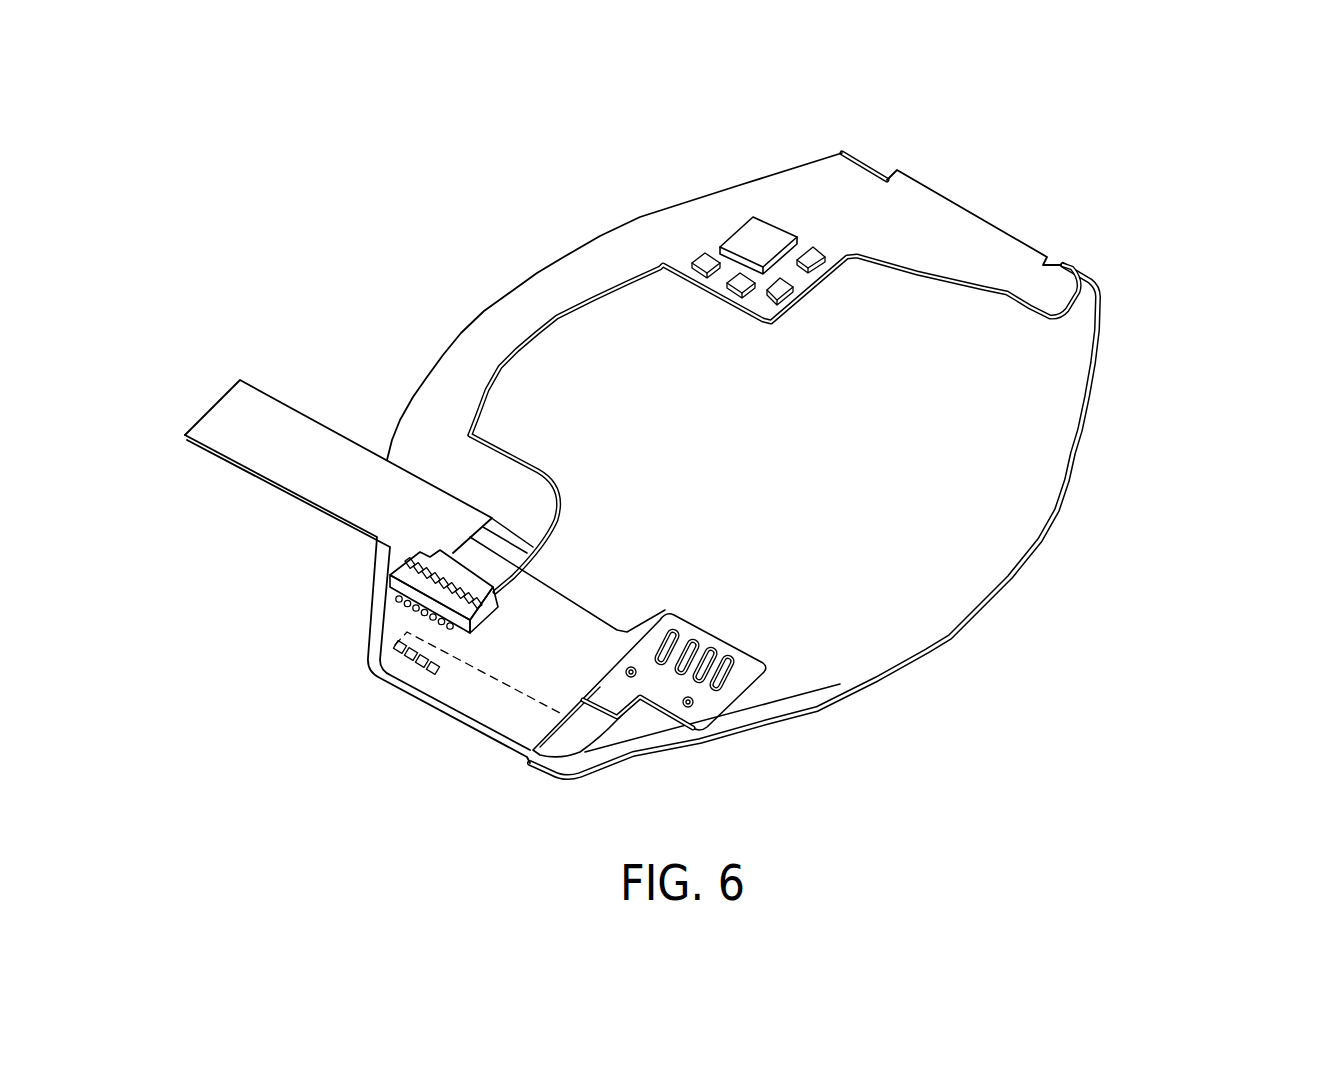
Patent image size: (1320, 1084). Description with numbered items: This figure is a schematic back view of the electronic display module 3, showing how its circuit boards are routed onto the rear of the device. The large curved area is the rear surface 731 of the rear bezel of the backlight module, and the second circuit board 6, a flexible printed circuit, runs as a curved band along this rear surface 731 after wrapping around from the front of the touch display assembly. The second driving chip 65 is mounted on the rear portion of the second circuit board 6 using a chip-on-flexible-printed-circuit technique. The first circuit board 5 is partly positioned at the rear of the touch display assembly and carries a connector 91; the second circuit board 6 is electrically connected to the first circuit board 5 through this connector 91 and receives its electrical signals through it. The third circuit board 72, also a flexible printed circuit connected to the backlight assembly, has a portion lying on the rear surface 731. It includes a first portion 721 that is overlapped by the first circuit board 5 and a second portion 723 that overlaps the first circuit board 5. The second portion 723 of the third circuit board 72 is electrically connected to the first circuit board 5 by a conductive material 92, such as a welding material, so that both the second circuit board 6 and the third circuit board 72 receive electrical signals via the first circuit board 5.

The electronic display module 3 is at (430, 201).
The first circuit board 5 is at (468, 733).
The second circuit board 6 is at (625, 218).
The second driving chip 65 is at (760, 237).
The third circuit board 72 is at (612, 745).
The first portion 721 is at (428, 676).
The second portion 723 is at (673, 687).
The rear surface 731 is at (1030, 445).
The connector 91 is at (413, 585).
The conductive material 92 is at (733, 663).